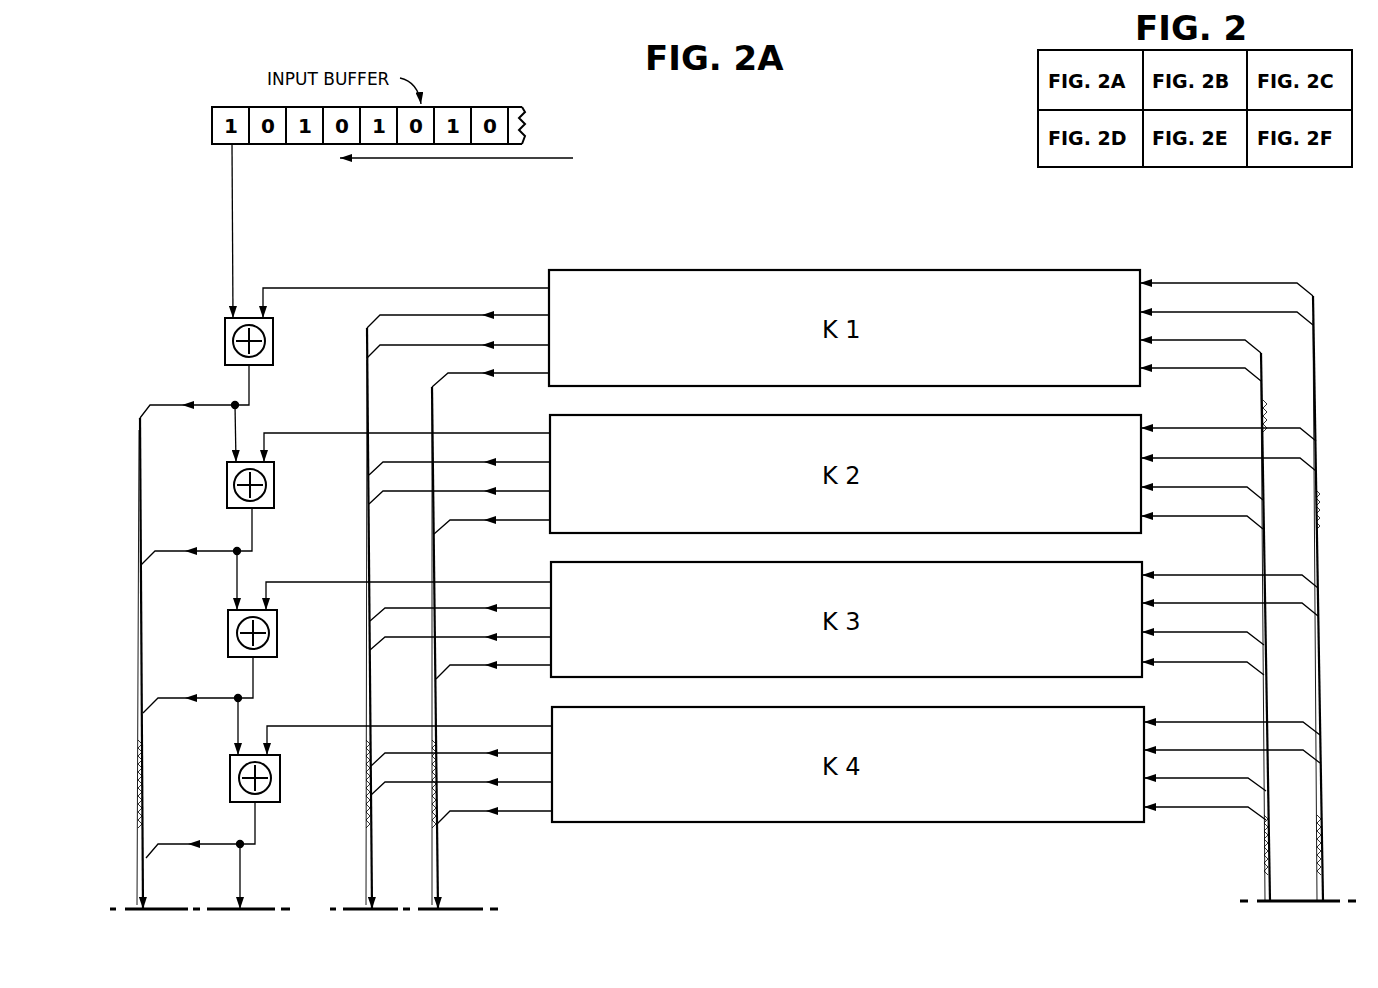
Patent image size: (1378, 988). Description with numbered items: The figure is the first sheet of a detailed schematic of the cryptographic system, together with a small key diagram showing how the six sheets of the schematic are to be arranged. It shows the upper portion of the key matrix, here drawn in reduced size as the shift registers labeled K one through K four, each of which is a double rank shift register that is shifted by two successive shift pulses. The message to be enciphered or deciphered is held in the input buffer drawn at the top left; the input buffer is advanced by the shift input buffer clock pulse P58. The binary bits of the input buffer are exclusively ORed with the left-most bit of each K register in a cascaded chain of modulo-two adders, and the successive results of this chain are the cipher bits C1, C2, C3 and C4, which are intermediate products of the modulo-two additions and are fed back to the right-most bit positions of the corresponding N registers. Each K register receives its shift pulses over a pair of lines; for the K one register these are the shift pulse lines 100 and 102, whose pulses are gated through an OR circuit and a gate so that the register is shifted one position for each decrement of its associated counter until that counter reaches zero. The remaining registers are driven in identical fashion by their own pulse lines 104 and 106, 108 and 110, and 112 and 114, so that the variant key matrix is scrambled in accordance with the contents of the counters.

The shift pulse line 100 is at (1185, 341).
The shift pulse line 102 is at (1185, 369).
The input line to K2 104 is at (1187, 488).
The input line to K2 106 is at (1187, 517).
The input line to K3 108 is at (1188, 633).
The input line to K3 110 is at (1188, 663).
The input line to K4 112 is at (1189, 779).
The input line to K4 114 is at (1189, 808).
The shift input buffer clock pulse P58 is at (477, 167).
The cipher bit C1 is at (212, 403).
The cipher bit C2 is at (212, 549).
The cipher bit C3 is at (216, 696).
The cipher bit C4 is at (219, 842).